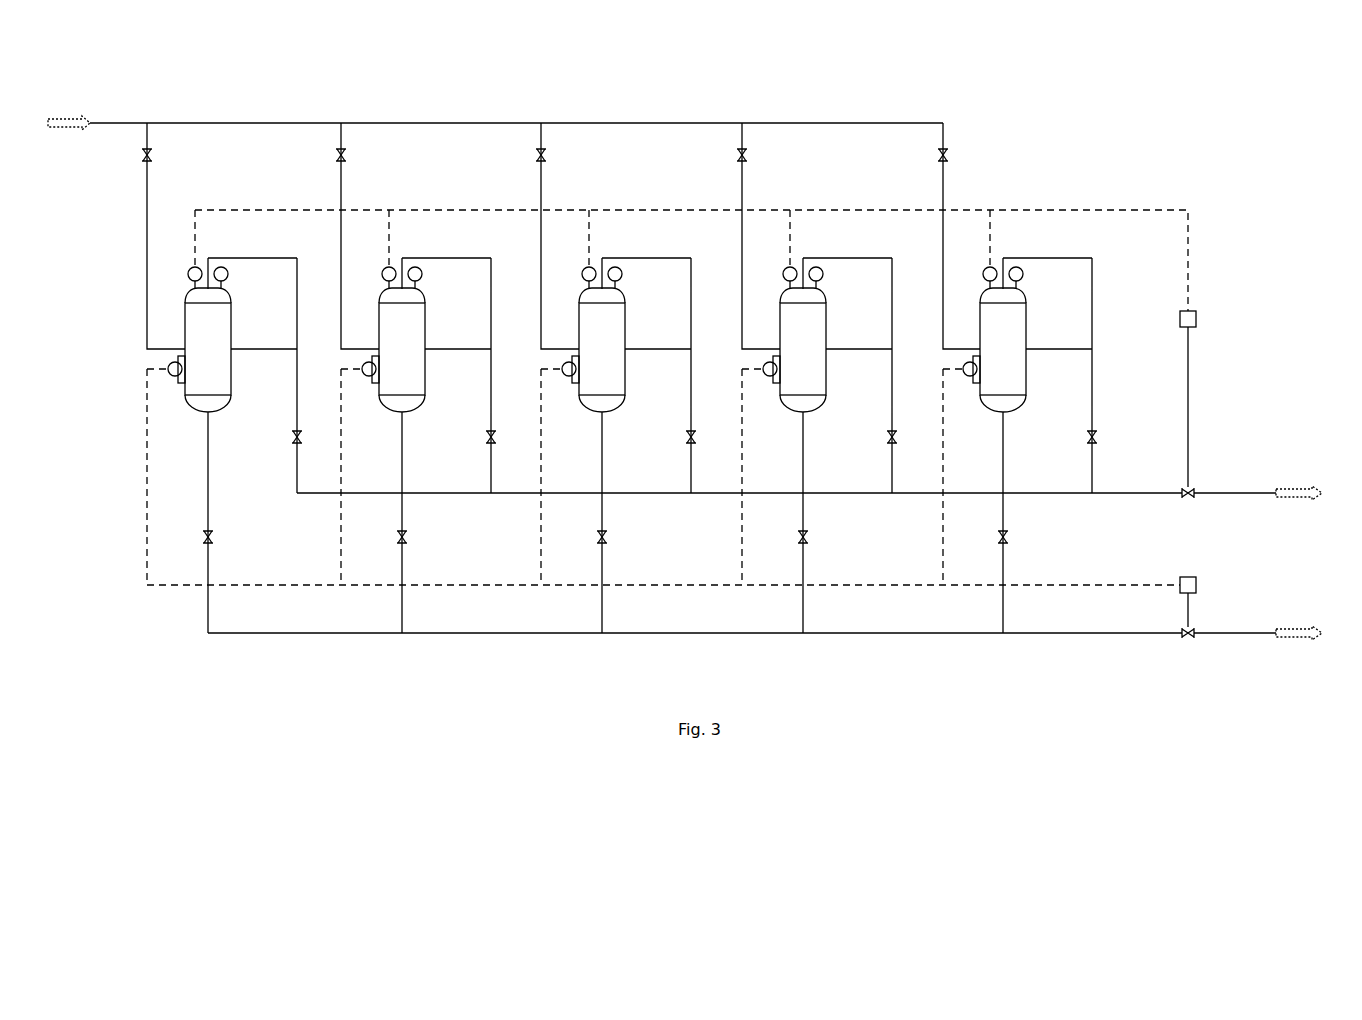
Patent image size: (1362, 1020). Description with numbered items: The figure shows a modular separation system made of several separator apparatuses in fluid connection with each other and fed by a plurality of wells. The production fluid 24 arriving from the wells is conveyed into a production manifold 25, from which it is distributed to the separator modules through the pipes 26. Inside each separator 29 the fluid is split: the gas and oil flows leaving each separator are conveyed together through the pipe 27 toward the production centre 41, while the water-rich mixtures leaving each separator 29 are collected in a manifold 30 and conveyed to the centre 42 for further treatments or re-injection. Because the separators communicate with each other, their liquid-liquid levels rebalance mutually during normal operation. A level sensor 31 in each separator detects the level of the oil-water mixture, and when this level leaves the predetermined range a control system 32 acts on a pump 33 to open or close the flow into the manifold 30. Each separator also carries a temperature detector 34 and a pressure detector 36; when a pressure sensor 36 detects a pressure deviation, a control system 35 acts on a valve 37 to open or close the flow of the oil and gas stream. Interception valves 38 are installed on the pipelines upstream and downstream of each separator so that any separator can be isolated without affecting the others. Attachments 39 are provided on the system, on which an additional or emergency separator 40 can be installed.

The production fluid 24 is at (62, 121).
The production manifold 25 is at (212, 123).
The pipes 26 is at (149, 196).
The pipe 27 is at (294, 370).
The separator 29 is at (218, 352).
The manifold 30 is at (295, 633).
The level sensor 31 is at (168, 364).
The control system 32 is at (1197, 582).
The pump 33 is at (1195, 630).
The temperature detector 34 is at (224, 272).
The control system 35 is at (1197, 316).
The pressure detector 36 is at (192, 268).
The valve 37 is at (1190, 487).
The interception valves 38 is at (138, 158).
The attachments 39 is at (948, 158).
The emergency separator 40 is at (1028, 336).
The production centre 41 is at (1290, 493).
The centre 42 is at (1288, 633).